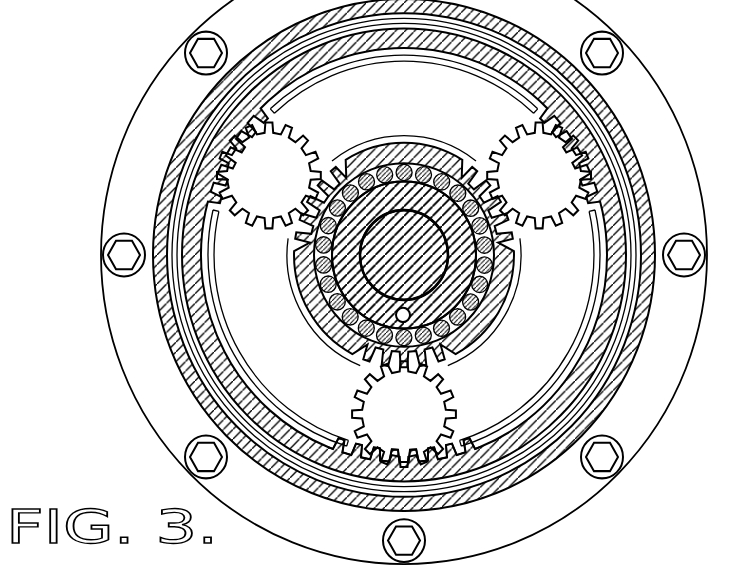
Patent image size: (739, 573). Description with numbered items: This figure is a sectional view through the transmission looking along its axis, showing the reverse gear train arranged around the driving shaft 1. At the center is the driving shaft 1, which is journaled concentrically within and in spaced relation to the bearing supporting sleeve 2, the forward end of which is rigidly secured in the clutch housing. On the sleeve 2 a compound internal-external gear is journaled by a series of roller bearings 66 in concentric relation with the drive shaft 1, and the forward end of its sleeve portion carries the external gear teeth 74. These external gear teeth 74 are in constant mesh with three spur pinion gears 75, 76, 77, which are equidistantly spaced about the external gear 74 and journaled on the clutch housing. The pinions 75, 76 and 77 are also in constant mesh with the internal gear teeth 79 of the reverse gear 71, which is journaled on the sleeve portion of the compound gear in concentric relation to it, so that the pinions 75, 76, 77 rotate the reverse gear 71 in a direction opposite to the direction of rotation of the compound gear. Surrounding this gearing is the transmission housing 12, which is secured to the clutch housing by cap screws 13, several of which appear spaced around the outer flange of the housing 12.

The driving shaft 1 is at (471, 255).
The bearing supporting sleeve 2 is at (441, 255).
The transmission housing 12 is at (411, 255).
The cap screws 13 is at (404, 297).
The roller bearings 66 is at (438, 255).
The reverse gear 71 is at (198, 60).
The external gear teeth 74 is at (404, 266).
The spur pinion gear 75 is at (424, 414).
The spur pinion gear 76 is at (269, 176).
The spur pinion gear 77 is at (539, 176).
The internal gear teeth 79 is at (418, 434).